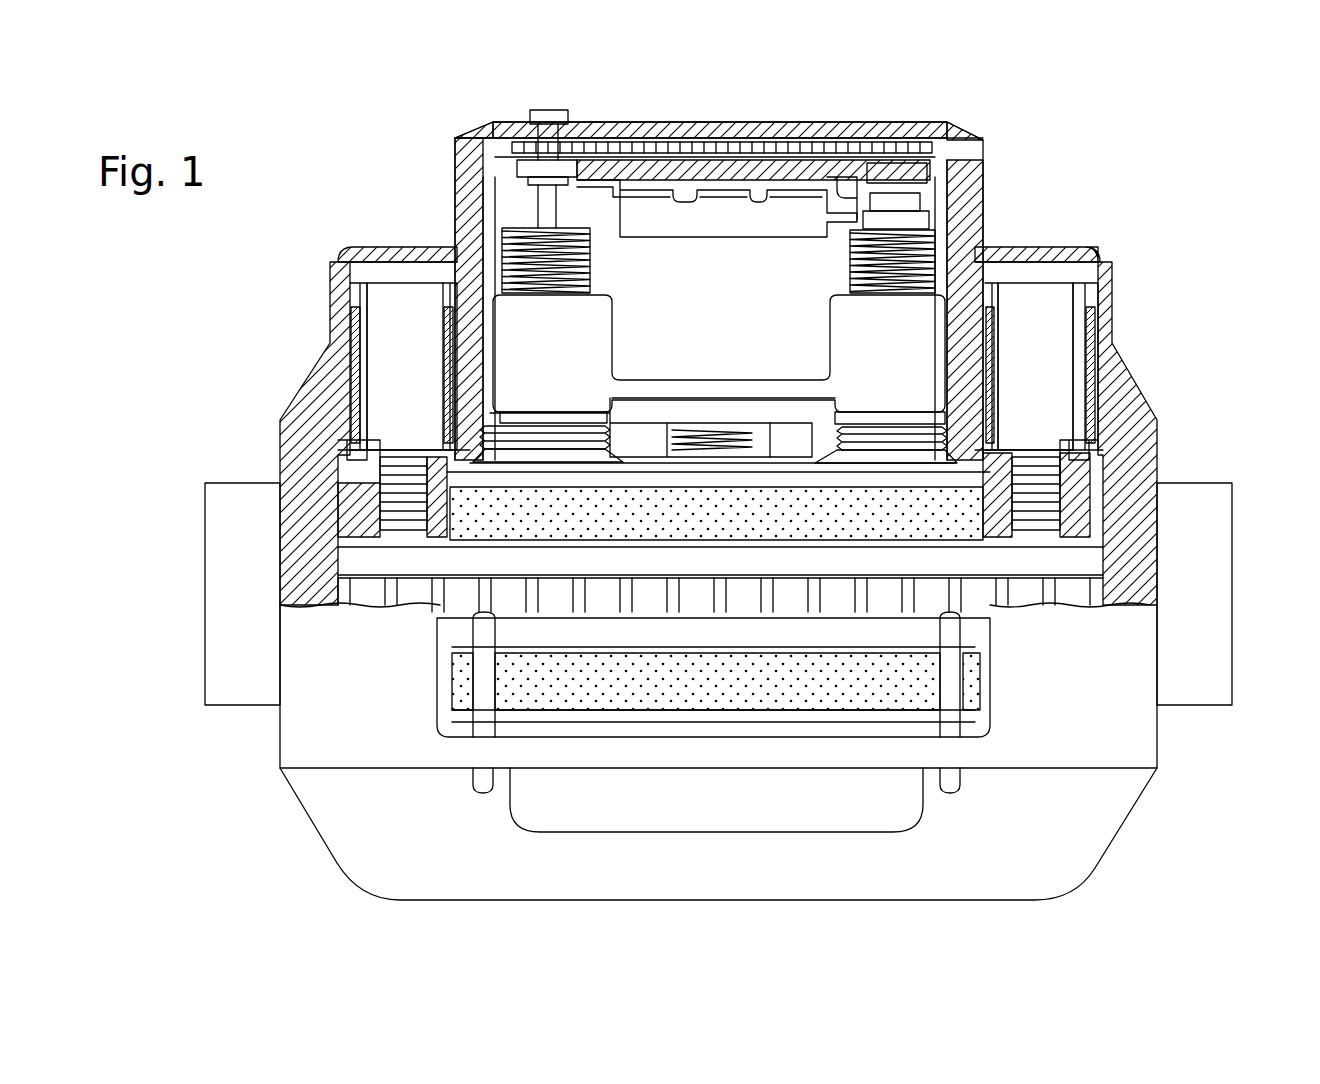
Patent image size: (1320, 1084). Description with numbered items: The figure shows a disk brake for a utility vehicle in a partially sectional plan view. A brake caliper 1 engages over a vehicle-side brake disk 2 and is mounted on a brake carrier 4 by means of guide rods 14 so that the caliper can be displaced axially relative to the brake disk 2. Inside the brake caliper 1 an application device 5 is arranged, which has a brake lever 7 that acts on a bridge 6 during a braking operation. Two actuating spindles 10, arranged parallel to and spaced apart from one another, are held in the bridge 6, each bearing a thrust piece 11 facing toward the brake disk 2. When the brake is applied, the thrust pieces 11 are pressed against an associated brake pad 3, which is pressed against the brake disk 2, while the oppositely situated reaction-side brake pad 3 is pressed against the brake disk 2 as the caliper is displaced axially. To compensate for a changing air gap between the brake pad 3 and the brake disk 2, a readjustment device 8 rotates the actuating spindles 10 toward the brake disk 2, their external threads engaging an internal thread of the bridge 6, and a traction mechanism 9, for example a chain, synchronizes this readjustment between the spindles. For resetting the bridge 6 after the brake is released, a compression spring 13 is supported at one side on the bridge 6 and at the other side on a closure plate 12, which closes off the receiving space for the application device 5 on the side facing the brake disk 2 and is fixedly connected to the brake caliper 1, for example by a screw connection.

The brake caliper 1 is at (1130, 437).
The brake disk 2 is at (1075, 568).
The brake pad 3 is at (965, 482).
The brake carrier 4 is at (1210, 610).
The application device 5 is at (597, 208).
The bridge 6 is at (898, 317).
The brake lever 7 is at (797, 210).
The readjustment device 8 is at (647, 142).
The traction mechanism 9 is at (733, 148).
The actuating spindle 10 is at (528, 262).
The thrust piece 11 is at (522, 460).
The closure plate 12 is at (650, 445).
The compression spring 13 is at (718, 428).
The guide rod 14 is at (400, 310).